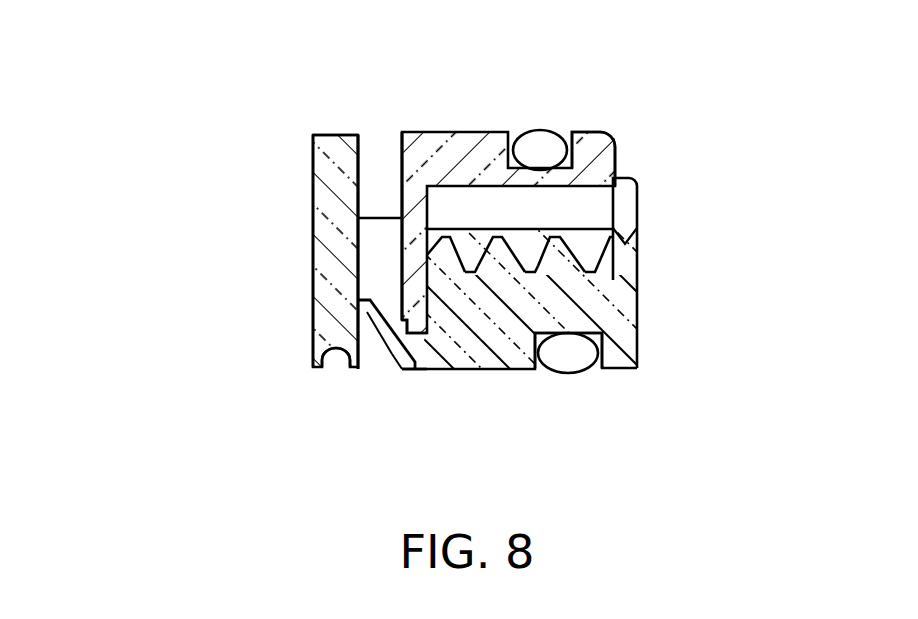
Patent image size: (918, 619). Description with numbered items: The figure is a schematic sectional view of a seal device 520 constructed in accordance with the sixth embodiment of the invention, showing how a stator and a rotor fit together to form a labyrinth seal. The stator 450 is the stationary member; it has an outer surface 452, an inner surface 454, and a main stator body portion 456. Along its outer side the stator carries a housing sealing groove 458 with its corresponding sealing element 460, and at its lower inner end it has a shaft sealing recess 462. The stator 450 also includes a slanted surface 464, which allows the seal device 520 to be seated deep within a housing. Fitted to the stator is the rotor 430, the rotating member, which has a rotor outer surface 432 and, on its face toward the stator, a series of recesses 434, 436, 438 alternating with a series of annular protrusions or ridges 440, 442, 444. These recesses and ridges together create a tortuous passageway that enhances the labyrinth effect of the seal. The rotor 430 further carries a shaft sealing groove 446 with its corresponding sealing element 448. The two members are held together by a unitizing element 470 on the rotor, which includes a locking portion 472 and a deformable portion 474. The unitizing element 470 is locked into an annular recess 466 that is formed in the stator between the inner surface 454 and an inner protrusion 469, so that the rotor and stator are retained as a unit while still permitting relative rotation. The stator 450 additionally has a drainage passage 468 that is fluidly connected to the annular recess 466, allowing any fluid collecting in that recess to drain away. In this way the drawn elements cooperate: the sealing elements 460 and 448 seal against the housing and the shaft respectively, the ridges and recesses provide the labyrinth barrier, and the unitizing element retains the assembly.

The seal device 520 is at (185, 100).
The rotor 430 is at (545, 313).
The rotor outer surface 432 is at (637, 350).
The recess 434 is at (468, 265).
The recess 436 is at (527, 263).
The recess 438 is at (590, 253).
The annular protrusion or ridge 440 is at (443, 238).
The annular protrusion or ridge 442 is at (497, 238).
The annular protrusion or ridge 444 is at (555, 238).
The shaft sealing groove 446 is at (590, 338).
The sealing element 448 is at (553, 355).
The stator 450 is at (327, 187).
The outer surface 452 is at (312, 245).
The inner surface 454 is at (372, 250).
The main stator body portion 456 is at (473, 157).
The housing sealing groove 458 is at (571, 160).
The sealing element 460 is at (542, 143).
The shaft sealing recess 462 is at (333, 365).
The slanted surface 464 is at (333, 136).
The annular recess 466 is at (387, 263).
The drainage passage 468 is at (365, 143).
The inner protrusion 469 is at (410, 321).
The unitizing element 470 is at (390, 358).
The locking portion 472 is at (370, 328).
The deformable portion 474 is at (400, 369).